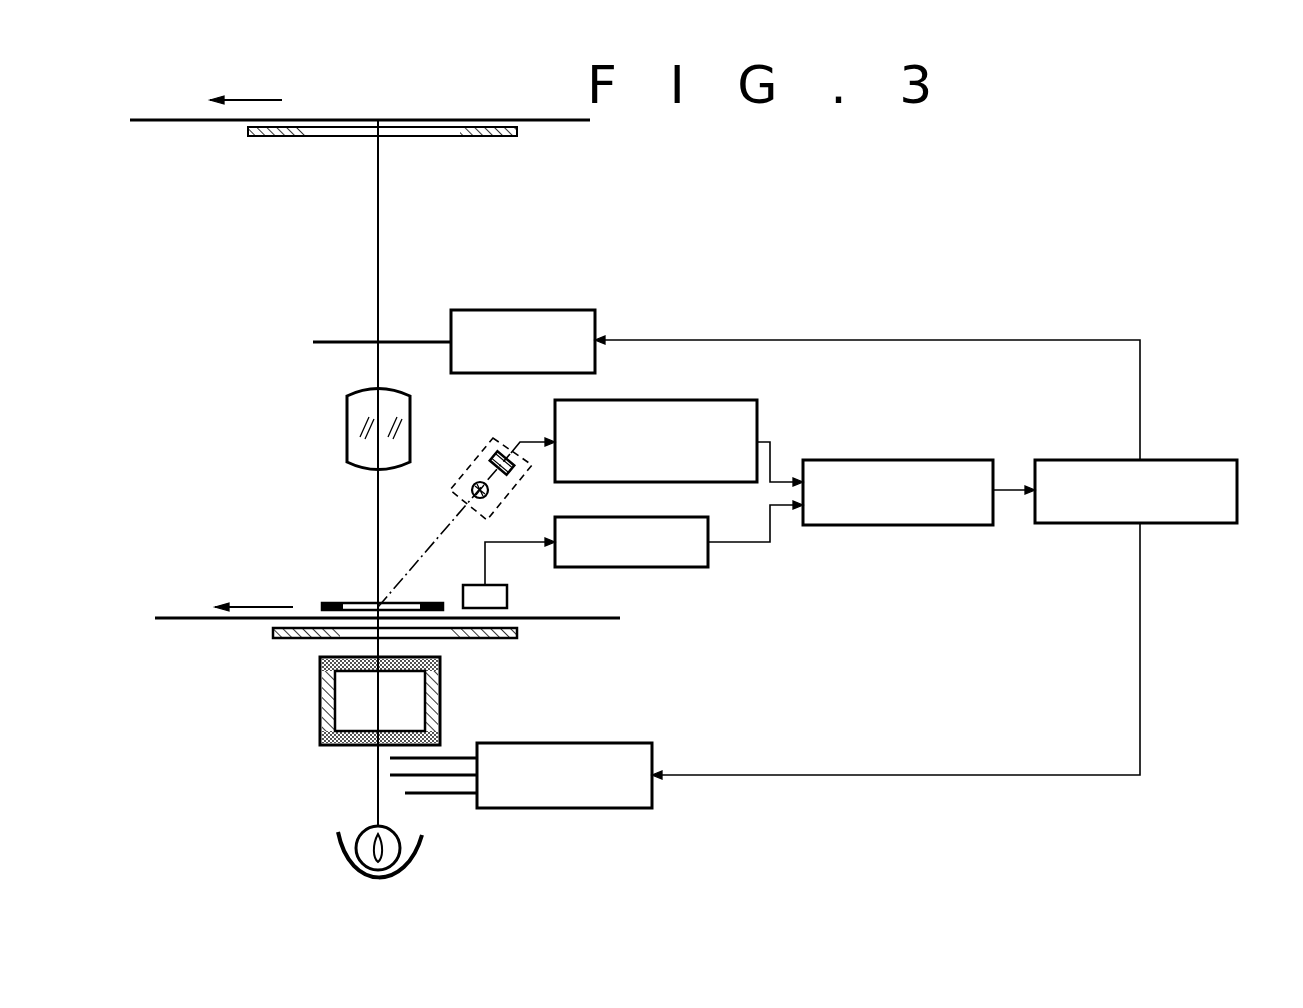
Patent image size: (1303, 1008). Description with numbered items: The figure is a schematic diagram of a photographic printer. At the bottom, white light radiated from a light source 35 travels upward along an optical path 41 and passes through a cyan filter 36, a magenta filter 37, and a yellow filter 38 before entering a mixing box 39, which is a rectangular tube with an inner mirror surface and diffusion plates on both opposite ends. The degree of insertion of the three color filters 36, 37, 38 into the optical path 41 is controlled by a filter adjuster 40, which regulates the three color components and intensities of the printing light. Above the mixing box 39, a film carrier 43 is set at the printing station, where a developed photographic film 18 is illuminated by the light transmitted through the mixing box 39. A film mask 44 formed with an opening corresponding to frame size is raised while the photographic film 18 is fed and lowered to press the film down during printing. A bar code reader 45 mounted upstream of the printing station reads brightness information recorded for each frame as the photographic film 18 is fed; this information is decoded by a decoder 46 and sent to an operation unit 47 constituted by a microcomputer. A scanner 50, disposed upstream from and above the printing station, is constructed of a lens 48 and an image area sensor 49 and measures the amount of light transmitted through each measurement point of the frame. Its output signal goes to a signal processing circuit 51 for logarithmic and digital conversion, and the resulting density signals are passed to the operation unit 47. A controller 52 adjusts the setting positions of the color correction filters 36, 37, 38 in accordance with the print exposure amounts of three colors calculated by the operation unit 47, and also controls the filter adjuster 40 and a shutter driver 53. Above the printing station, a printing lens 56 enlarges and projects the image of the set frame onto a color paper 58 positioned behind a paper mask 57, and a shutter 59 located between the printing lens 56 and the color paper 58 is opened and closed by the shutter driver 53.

The photographic film 18 is at (199, 614).
The light source 35 is at (357, 852).
The cyan filter 36 is at (450, 796).
The magenta filter 37 is at (395, 778).
The yellow filter 38 is at (432, 757).
The mixing box 39 is at (320, 709).
The filter adjuster 40 is at (552, 808).
The optical path 41 is at (377, 288).
The film carrier 43 is at (275, 641).
The film mask 44 is at (330, 602).
The bar code reader 45 is at (507, 598).
The decoder 46 is at (658, 567).
The operation unit 47 is at (880, 460).
The lens 48 is at (472, 492).
The image area sensor 49 is at (491, 454).
The scanner 50 is at (507, 452).
The signal processing circuit 51 is at (662, 400).
The controller 52 is at (1072, 460).
The shutter driver 53 is at (560, 309).
The printing lens 56 is at (347, 411).
The paper mask 57 is at (268, 137).
The color paper 58 is at (557, 122).
The shutter 59 is at (333, 341).